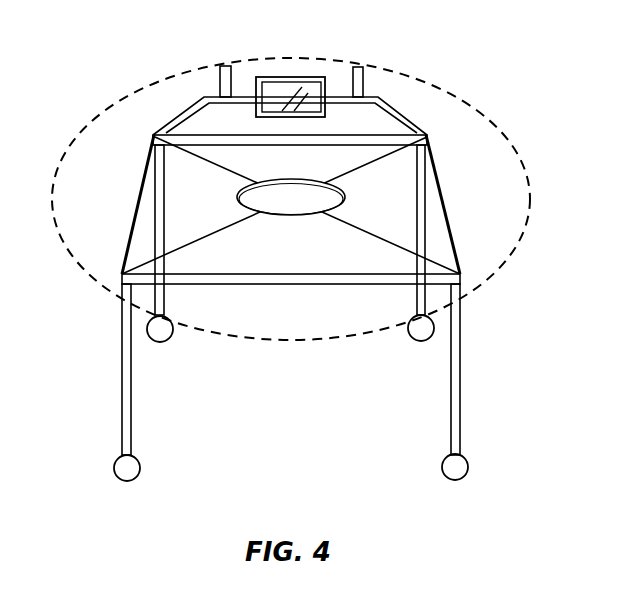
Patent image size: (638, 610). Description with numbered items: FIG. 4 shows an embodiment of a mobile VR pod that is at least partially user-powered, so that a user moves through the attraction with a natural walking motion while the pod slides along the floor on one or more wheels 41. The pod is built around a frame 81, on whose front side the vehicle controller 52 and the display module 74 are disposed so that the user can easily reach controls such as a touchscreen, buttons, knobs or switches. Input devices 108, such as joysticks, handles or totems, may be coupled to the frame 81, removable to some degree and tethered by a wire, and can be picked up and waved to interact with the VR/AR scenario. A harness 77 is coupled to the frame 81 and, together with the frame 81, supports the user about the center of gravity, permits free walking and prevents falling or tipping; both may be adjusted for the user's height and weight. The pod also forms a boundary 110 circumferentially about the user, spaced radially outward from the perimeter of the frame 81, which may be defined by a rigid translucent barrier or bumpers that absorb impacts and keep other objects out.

The wheels 41 is at (467, 475).
The vehicle controller 52 is at (277, 77).
The display module 74 is at (293, 77).
The harness 77 is at (363, 227).
The frame 81 is at (460, 365).
The input devices 108 is at (225, 66).
The boundary 110 is at (530, 196).